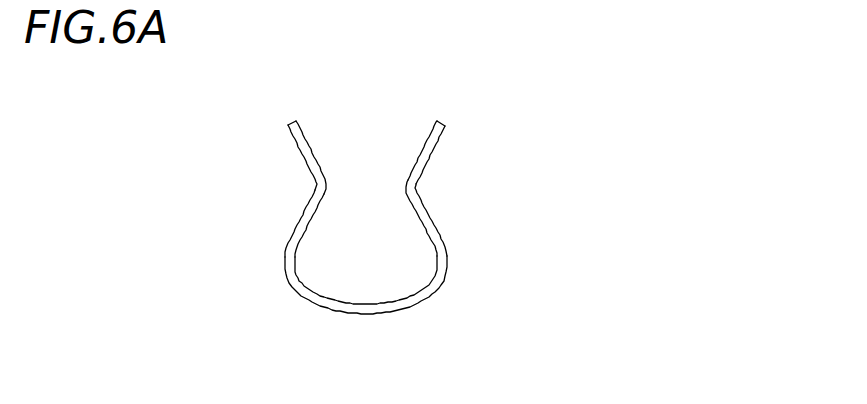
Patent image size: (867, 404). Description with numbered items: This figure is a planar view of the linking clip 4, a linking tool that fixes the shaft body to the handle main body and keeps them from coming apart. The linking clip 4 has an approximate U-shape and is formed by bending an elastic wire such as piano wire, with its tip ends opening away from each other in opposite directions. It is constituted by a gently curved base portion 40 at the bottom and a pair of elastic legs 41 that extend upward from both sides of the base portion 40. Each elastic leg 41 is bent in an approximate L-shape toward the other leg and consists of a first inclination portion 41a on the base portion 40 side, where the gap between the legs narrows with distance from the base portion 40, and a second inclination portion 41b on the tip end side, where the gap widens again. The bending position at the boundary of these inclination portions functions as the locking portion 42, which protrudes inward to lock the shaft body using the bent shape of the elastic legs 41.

The linking clip 4 is at (398, 110).
The base portion 40 is at (357, 305).
The elastic legs 41 is at (291, 127).
The first inclination portion 41a is at (296, 232).
The second inclination portion 41b is at (298, 143).
The locking portion 42 is at (330, 187).